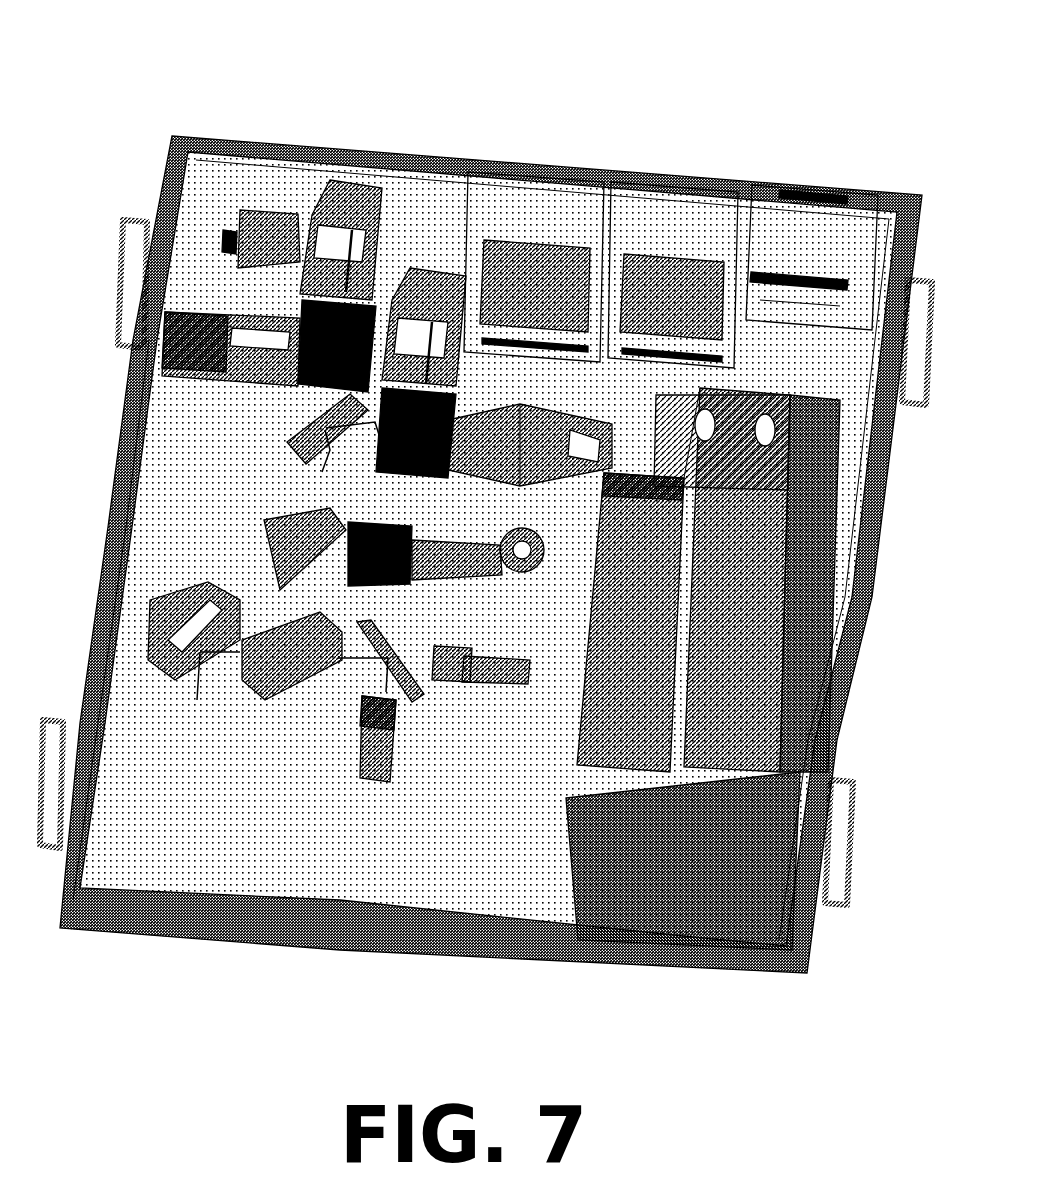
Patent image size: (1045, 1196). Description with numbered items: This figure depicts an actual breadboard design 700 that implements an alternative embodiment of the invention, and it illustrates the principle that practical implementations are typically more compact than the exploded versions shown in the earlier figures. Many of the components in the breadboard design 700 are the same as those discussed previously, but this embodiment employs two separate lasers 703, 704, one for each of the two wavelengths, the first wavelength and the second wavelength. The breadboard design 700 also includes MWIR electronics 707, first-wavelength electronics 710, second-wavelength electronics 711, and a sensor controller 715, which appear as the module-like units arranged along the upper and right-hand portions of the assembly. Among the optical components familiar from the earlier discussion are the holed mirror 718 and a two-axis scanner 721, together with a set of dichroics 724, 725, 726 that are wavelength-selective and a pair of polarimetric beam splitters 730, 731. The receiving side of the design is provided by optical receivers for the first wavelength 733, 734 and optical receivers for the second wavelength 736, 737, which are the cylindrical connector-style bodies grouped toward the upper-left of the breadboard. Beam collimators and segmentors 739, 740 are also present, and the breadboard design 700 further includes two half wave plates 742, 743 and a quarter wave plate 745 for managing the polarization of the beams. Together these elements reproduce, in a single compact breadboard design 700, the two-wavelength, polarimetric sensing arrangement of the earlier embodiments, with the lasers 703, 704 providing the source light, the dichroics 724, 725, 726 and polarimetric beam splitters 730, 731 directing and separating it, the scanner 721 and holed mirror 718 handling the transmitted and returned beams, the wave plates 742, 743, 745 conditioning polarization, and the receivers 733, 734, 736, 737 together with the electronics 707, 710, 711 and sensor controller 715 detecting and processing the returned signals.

The breadboard design 700 is at (140, 42).
The laser 703 is at (630, 622).
The laser 704 is at (762, 580).
The MWIR electronics 707 is at (772, 420).
The λ1 electronics 710 is at (534, 267).
The λ2 electronics 711 is at (673, 275).
The sensor controller 715 is at (812, 257).
The holed mirror 718 is at (267, 700).
The two-axis scanner 721 is at (217, 585).
The dichroic 724 is at (270, 552).
The dichroic 725 is at (288, 440).
The dichroic 726 is at (394, 638).
The polarimetric beam splitter 730 is at (410, 472).
The polarimetric beam splitter 731 is at (322, 394).
The λ1 optical receiver 733 is at (242, 318).
The λ1 optical receiver 734 is at (333, 214).
The λ2 optical receiver 736 is at (547, 413).
The λ2 optical receiver 737 is at (444, 262).
The beam collimator and segmentor 739 is at (388, 758).
The beam collimator and segmentor 740 is at (508, 680).
The half wave plate 742 is at (444, 648).
The half wave plate 743 is at (370, 694).
The quarter wave plate 745 is at (260, 622).